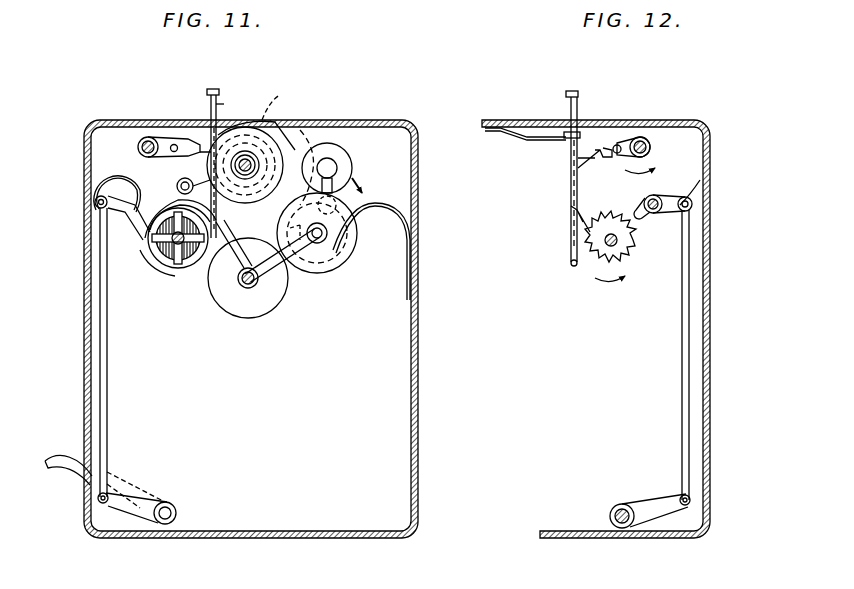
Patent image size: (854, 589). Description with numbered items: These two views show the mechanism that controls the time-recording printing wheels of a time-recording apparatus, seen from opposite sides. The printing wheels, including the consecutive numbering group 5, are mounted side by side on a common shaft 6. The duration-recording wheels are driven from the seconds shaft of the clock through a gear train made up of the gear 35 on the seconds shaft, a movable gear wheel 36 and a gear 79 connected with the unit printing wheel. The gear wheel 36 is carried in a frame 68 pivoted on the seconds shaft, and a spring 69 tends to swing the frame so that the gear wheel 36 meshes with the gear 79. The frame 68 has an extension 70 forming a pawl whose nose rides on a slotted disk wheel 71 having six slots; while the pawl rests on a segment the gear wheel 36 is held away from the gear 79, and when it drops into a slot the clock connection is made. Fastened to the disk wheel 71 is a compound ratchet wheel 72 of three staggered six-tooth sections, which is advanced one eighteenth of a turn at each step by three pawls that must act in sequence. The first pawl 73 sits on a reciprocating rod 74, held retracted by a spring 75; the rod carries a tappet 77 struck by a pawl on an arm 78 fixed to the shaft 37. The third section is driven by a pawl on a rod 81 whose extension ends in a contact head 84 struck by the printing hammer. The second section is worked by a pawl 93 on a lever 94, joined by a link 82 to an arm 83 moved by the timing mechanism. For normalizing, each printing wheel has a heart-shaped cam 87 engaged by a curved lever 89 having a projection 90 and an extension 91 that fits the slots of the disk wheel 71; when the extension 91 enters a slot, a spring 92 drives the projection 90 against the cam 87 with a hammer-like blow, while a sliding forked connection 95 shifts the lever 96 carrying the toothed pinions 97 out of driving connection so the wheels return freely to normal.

In FIG. 11, the third group of printing wheels 5 is at (275, 95).
In FIG. 11, the common shaft 6 is at (278, 140).
In FIG. 11, the gear on seconds shaft 35 is at (251, 318).
In FIG. 11, the movable gear wheel 36 is at (354, 248).
In FIG. 11, the shaft 37 is at (145, 137).
In FIG. 12, the shaft 37 is at (648, 138).
In FIG. 11, the frame 68 is at (283, 295).
In FIG. 11, the spring 69 is at (416, 200).
In FIG. 11, the pawl extension 70 is at (196, 265).
In FIG. 11, the slotted disk wheel 71 is at (150, 262).
In FIG. 12, the compound ratchet wheel 72 is at (605, 280).
In FIG. 12, the driving pawl 73 is at (580, 232).
In FIG. 12, the reciprocating rod 74 is at (570, 178).
In FIG. 12, the spring 75 is at (537, 132).
In FIG. 11, the tappet 77 is at (178, 182).
In FIG. 12, the tappet 77 is at (588, 163).
In FIG. 11, the arm 78 is at (184, 139).
In FIG. 12, the arm 78 is at (628, 136).
In FIG. 11, the gear 79 is at (256, 150).
In FIG. 11, the rod 81 is at (218, 104).
In FIG. 12, the rod 81 is at (580, 106).
In FIG. 11, the link 82 is at (99, 360).
In FIG. 12, the link 82 is at (690, 305).
In FIG. 11, the arm 83 is at (141, 498).
In FIG. 12, the arm 83 is at (650, 505).
In FIG. 11, the contact head 84 is at (213, 88).
In FIG. 12, the contact head 84 is at (571, 90).
In FIG. 11, the heart-shaped cam 87 is at (252, 127).
In FIG. 11, the curved lever 89 is at (222, 295).
In FIG. 11, the projection 90 is at (305, 130).
In FIG. 11, the extension 91 is at (105, 212).
In FIG. 11, the spring 92 is at (94, 170).
In FIG. 11, the pawl 93 is at (148, 254).
In FIG. 12, the pawl 93 is at (640, 222).
In FIG. 11, the lever 94 is at (95, 202).
In FIG. 12, the lever 94 is at (700, 178).
In FIG. 11, the sliding forked connection 95 is at (330, 265).
In FIG. 11, the lever 96 is at (345, 175).
In FIG. 11, the toothed pinions 97 is at (328, 143).